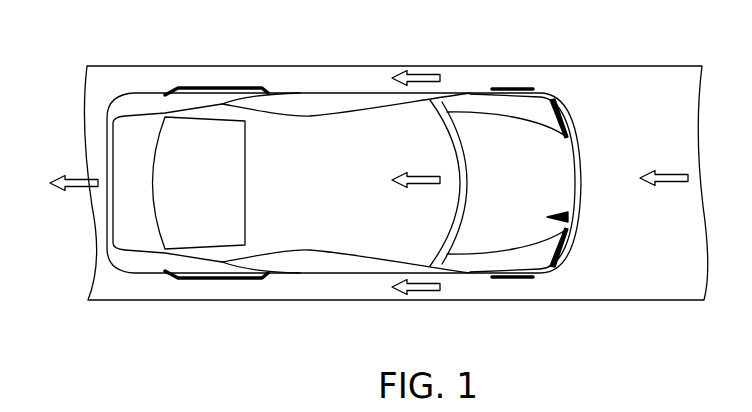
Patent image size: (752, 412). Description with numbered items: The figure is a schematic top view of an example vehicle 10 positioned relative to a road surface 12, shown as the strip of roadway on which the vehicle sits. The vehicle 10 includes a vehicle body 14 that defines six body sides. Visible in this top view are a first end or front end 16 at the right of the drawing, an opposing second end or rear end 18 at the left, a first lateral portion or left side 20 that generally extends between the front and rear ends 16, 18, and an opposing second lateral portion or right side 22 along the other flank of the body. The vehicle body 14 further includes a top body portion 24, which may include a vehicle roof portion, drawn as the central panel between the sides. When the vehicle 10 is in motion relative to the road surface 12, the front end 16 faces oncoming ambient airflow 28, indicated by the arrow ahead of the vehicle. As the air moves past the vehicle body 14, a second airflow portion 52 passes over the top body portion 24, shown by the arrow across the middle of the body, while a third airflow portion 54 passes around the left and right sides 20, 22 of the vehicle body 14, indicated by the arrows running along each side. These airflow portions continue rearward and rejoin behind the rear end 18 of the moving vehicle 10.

The vehicle 10 is at (607, 313).
The road surface 12 is at (650, 66).
The vehicle body 14 is at (567, 217).
The front end 16 is at (565, 132).
The rear end 18 is at (102, 167).
The left side 20 is at (365, 95).
The right side 22 is at (345, 272).
The top body portion 24 is at (310, 135).
The oncoming ambient airflow 28 is at (683, 176).
The second airflow portion 52 is at (420, 175).
The third airflow portion 54 is at (420, 72).